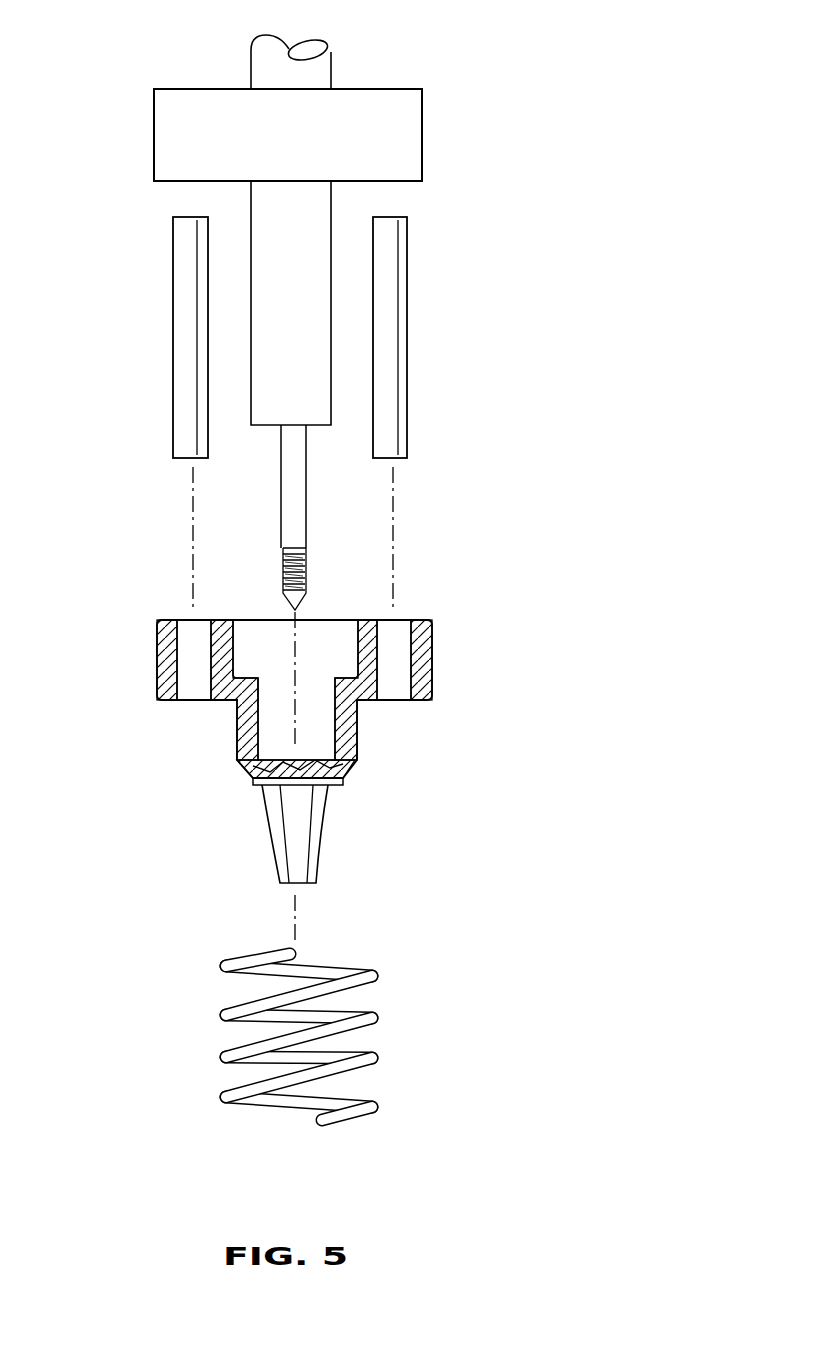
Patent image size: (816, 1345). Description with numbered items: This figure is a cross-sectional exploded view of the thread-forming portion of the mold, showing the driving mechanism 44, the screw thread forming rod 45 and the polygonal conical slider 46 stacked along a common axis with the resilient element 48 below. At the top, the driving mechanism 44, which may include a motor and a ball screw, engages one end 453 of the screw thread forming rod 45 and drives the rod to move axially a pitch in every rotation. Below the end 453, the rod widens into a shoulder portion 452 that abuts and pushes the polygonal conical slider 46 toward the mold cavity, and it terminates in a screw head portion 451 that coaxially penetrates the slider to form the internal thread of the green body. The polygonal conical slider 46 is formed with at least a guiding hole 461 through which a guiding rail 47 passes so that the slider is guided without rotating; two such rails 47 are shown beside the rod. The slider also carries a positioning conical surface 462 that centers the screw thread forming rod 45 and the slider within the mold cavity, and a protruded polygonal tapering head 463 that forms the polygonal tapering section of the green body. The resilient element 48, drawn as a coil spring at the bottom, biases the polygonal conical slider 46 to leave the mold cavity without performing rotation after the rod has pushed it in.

The driving mechanism 44 is at (310, 141).
The screw thread forming rod 45 is at (300, 308).
The screw head portion 451 is at (297, 560).
The shoulder portion 452 is at (318, 412).
The end 453 is at (312, 47).
The polygonal conical slider 46 is at (301, 778).
The guiding hole 461 is at (197, 660).
The positioning conical surface 462 is at (347, 773).
The protruded polygonal tapering head 463 is at (312, 833).
The guiding rail 47 is at (184, 274).
The resilient element 48 is at (268, 1102).